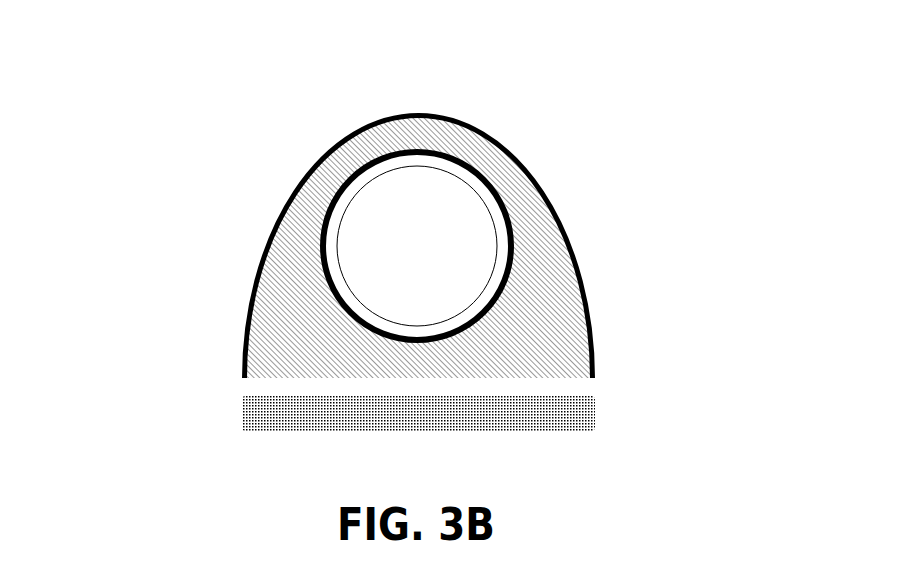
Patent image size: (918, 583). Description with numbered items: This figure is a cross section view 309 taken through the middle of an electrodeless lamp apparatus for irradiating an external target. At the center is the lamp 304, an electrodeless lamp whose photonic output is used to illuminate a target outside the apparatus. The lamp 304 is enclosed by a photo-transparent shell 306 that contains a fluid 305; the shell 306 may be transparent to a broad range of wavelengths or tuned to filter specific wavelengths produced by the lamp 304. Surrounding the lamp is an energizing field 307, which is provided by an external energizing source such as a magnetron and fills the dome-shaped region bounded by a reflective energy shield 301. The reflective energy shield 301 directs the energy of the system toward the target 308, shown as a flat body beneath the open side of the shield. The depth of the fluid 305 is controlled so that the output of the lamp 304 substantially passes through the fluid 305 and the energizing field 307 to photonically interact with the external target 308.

The reflective energy shield 301 is at (260, 255).
The lamp 304 is at (417, 245).
The fluid 305 is at (502, 258).
The photo-transparent shell 306 is at (320, 230).
The energizing field 307 is at (278, 298).
The target 308 is at (418, 412).
The cross section view 309 is at (628, 113).